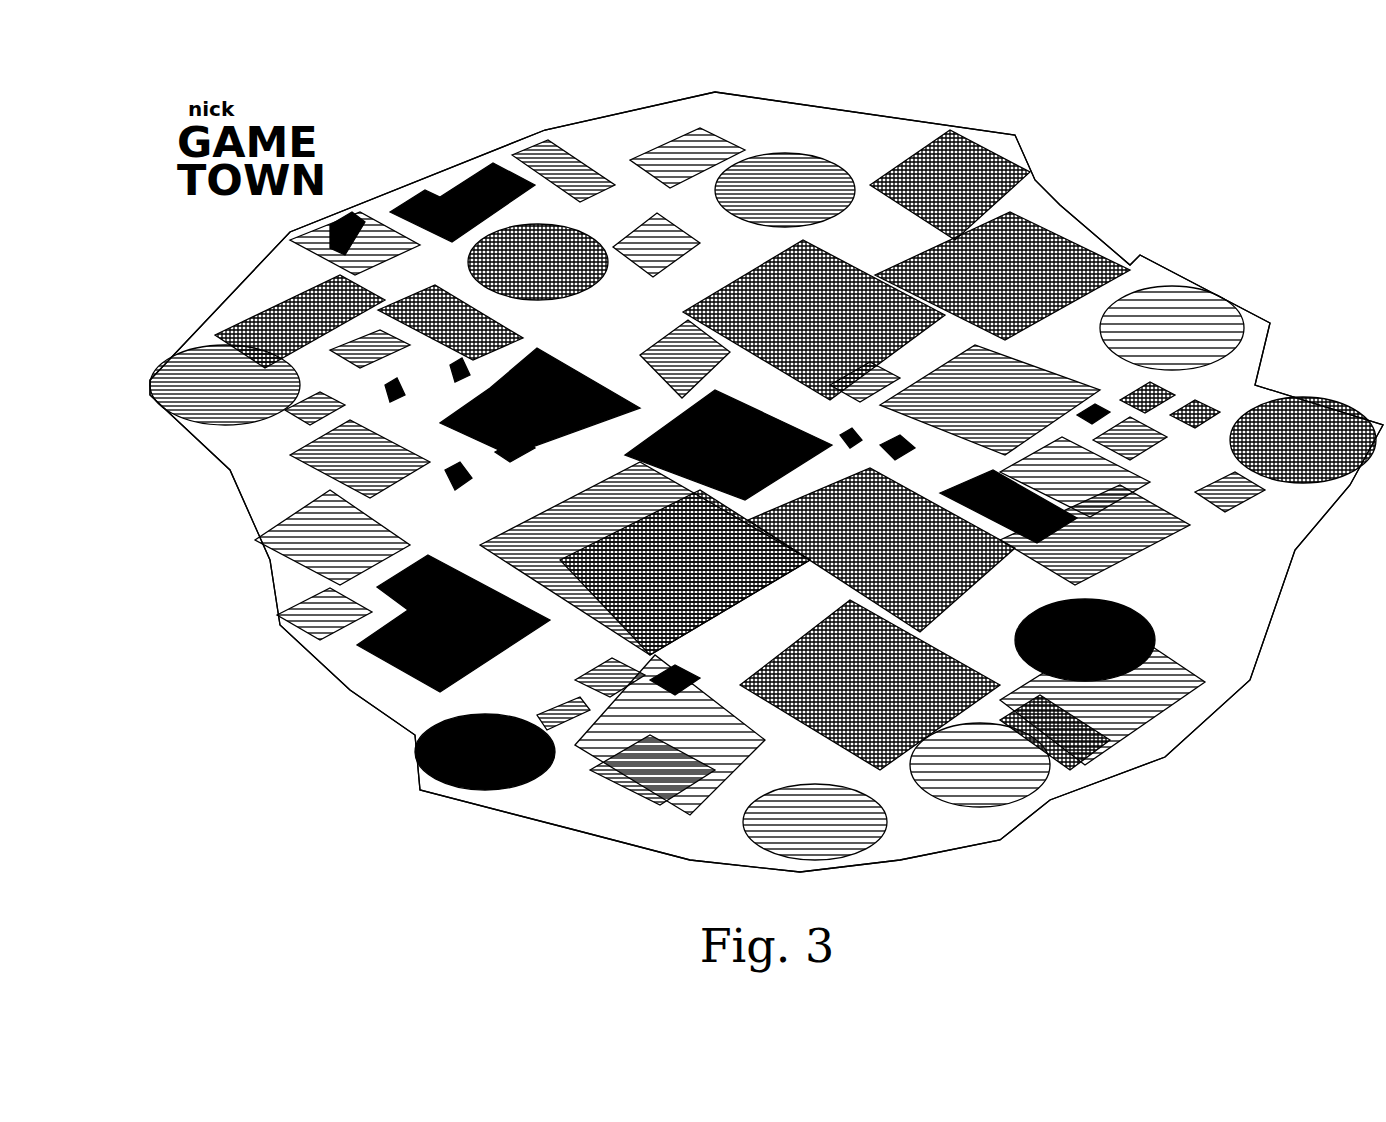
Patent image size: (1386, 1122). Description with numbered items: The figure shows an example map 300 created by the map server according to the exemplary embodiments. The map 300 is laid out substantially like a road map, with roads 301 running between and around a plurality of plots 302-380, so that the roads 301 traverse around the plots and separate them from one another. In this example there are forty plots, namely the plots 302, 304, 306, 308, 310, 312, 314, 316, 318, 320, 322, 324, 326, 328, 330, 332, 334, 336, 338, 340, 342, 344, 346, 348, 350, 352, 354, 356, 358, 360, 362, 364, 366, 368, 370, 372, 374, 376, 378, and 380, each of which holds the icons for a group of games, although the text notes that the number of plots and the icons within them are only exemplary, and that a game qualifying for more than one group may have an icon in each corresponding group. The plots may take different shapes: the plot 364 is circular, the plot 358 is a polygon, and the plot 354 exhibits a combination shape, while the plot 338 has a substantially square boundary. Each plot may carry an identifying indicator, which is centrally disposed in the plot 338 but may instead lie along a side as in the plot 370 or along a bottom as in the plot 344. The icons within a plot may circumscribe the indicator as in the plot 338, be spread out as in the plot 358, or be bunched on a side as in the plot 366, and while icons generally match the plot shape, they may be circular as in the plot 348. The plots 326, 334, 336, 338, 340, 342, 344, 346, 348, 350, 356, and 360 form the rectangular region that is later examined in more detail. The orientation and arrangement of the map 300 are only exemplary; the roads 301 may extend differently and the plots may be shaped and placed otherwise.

The map 300 is at (1364, 112).
The roads 301 is at (970, 655).
The plot 302 is at (770, 165).
The plot 304 is at (818, 312).
The plot 306 is at (912, 148).
The plot 308 is at (1057, 248).
The plot 310 is at (1020, 380).
The plot 312 is at (1163, 302).
The plot 314 is at (1105, 408).
The plot 316 is at (1163, 400).
The plot 318 is at (1347, 440).
The plot 320 is at (1255, 503).
The plot 322 is at (1177, 532).
The plot 324 is at (1147, 558).
The plot 326 is at (993, 540).
The plot 328 is at (1175, 657).
The plot 330 is at (1225, 708).
The plot 332 is at (1020, 775).
The plot 334 is at (890, 735).
The plot 336 is at (822, 835).
The plot 338 is at (745, 500).
The plot 340 is at (662, 692).
The plot 342 is at (653, 790).
The plot 344 is at (637, 690).
The plot 346 is at (557, 725).
The plot 348 is at (477, 773).
The plot 350 is at (402, 668).
The plot 352 is at (315, 622).
The plot 354 is at (512, 450).
The plot 356 is at (505, 448).
The plot 358 is at (455, 425).
The plot 360 is at (371, 432).
The plot 362 is at (358, 425).
The plot 364 is at (183, 350).
The plot 366 is at (270, 325).
The plot 368 is at (380, 298).
The plot 370 is at (341, 240).
The plot 372 is at (444, 215).
The plot 374 is at (525, 250).
The plot 376 is at (548, 162).
The plot 378 is at (642, 240).
The plot 380 is at (662, 152).